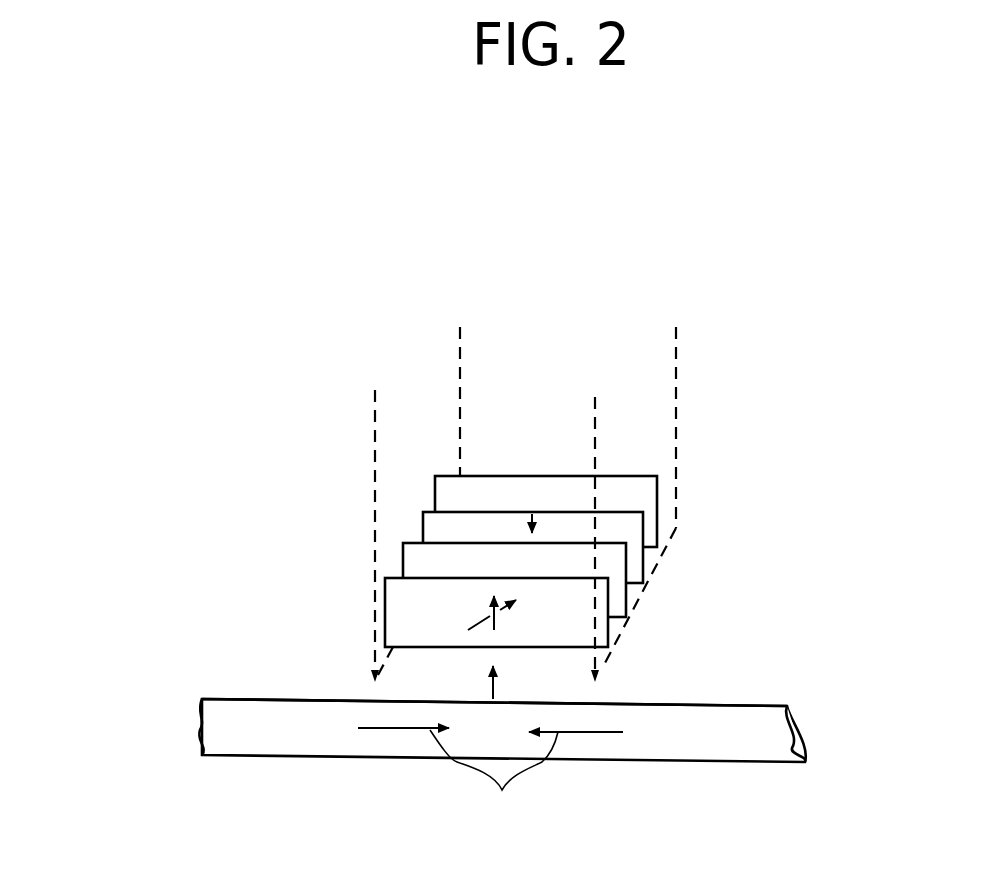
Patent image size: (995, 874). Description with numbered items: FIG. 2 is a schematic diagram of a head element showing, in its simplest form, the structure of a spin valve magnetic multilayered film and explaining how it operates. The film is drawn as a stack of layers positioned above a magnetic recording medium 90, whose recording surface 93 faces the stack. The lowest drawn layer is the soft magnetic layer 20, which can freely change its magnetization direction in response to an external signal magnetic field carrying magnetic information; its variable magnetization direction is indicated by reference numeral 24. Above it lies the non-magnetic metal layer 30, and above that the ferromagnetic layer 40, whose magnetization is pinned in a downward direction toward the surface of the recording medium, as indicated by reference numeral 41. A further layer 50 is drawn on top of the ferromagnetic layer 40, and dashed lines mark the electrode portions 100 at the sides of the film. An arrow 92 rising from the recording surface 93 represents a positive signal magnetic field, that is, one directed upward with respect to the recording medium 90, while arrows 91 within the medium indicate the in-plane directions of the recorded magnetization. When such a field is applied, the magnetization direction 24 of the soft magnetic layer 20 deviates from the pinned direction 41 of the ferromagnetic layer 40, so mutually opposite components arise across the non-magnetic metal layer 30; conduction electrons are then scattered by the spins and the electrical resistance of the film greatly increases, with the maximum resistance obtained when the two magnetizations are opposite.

The soft magnetic layer 20 is at (385, 595).
The magnetization direction of the soft magnetic layer 24 is at (503, 620).
The non-magnetic metal layer 30 is at (403, 560).
The ferromagnetic layer 40 is at (423, 528).
The pinned magnetization direction of the ferromagnetic layer 41 is at (532, 522).
The antiferromagnetic layer 50 is at (435, 488).
The recording medium 90 is at (805, 762).
The in-plane directions 91 is at (490, 778).
The positive signal magnetic field direction 92 is at (493, 683).
The recording surface 93 is at (755, 705).
The electrode portion 100 is at (405, 432).